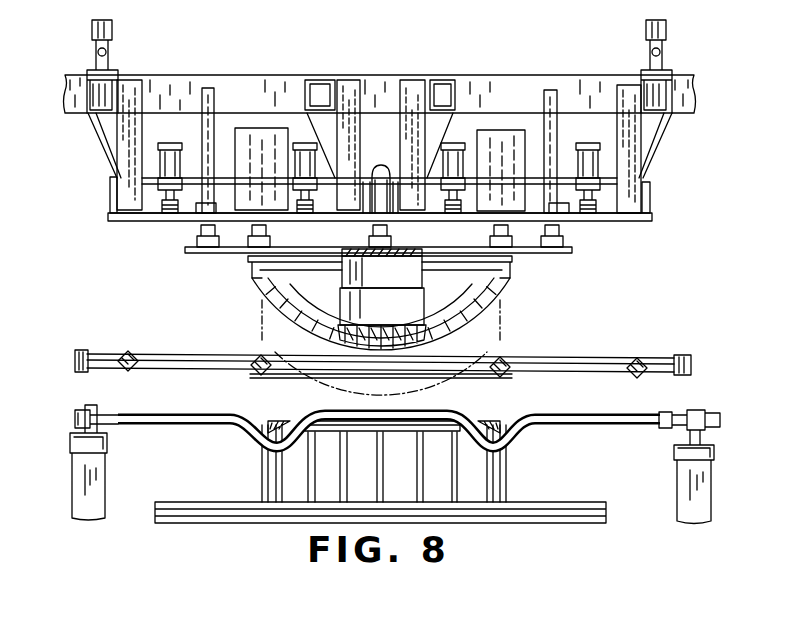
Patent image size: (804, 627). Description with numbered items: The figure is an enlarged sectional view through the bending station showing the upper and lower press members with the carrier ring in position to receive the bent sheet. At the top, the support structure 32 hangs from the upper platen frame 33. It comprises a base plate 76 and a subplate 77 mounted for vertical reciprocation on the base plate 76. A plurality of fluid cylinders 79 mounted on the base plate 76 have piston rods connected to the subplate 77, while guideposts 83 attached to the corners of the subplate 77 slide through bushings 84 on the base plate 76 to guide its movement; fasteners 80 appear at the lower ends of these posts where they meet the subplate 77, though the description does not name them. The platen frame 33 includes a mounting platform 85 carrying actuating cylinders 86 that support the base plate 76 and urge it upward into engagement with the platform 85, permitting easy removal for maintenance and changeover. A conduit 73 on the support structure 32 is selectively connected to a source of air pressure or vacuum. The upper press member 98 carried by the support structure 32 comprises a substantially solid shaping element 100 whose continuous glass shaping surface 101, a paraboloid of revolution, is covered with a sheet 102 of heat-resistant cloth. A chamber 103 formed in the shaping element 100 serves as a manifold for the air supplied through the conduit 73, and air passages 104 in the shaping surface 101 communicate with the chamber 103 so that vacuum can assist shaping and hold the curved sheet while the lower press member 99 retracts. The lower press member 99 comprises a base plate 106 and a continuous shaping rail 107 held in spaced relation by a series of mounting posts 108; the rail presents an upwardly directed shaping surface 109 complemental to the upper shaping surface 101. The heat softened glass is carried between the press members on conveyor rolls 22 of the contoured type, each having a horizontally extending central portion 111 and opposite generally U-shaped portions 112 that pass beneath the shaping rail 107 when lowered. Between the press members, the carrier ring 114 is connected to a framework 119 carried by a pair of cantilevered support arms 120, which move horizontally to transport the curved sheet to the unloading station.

The conveyor rolls 22 is at (616, 426).
The support structure 32 is at (637, 240).
The upper platen frame 33 is at (481, 75).
The conduit 73 is at (384, 166).
The base plate 76 is at (140, 217).
The subplate 77 is at (192, 249).
The fluid cylinders 79 is at (262, 130).
The nut 80 is at (255, 231).
The guideposts 83 is at (209, 90).
The bushings 84 is at (200, 205).
The mounting platform 85 is at (655, 203).
The actuating cylinders 86 is at (158, 158).
The upper press member 98 is at (246, 304).
The lower press member 99 is at (255, 410).
The shaping element 100 is at (512, 308).
The glass shaping surface 101 is at (262, 325).
The sheet of heat-resistant cloth 102 is at (352, 352).
The chamber 103 is at (398, 283).
The air passages 104 is at (352, 343).
The base plate 106 is at (163, 502).
The shaping rail 107 is at (240, 432).
The mounting posts 108 is at (504, 480).
The shaping surface 109 is at (481, 415).
The central portion 111 is at (408, 412).
The U-shaped portions 112 is at (263, 458).
The carrier ring 114 is at (357, 376).
The framework 119 is at (599, 353).
The support arms 120 is at (80, 351).